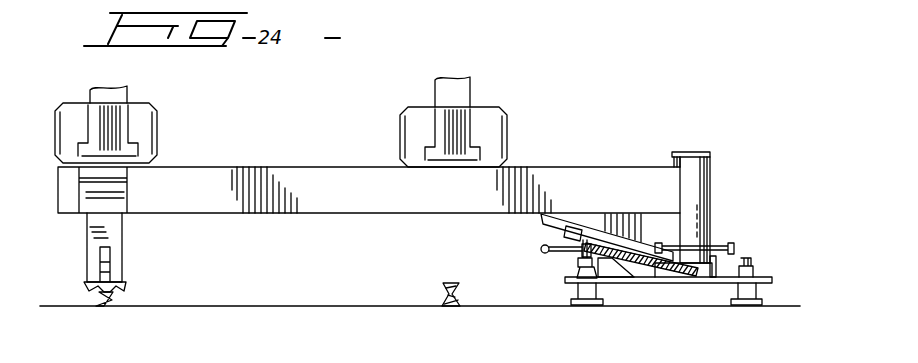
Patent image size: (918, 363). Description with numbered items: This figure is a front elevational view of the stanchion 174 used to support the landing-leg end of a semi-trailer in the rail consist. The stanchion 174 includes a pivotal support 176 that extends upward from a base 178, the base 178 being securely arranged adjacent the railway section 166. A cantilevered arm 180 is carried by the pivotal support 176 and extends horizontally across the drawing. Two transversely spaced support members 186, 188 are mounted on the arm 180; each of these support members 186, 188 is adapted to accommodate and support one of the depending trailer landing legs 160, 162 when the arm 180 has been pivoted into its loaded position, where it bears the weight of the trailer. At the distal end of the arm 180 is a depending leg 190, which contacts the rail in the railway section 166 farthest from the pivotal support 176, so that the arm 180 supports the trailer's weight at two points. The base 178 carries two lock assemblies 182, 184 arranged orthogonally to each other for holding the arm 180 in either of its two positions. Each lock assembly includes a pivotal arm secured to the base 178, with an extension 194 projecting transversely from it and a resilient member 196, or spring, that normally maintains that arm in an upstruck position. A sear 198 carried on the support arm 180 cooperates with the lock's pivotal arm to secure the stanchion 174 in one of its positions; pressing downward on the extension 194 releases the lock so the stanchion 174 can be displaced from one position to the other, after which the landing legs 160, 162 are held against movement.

The trailer landing leg 160 is at (463, 90).
The trailer landing leg 162 is at (123, 98).
The railway section 166 is at (440, 287).
The stanchion 174 is at (688, 150).
The pivotal support 176 is at (697, 178).
The base 178 is at (762, 285).
The cantilevered arm 180 is at (303, 175).
The lock assembly 182 is at (574, 258).
The lock assembly 184 is at (725, 263).
The support member 186 is at (141, 132).
The support member 188 is at (485, 143).
The depending leg 190 is at (117, 254).
The extension 194 is at (541, 249).
The resilient member 196 is at (627, 262).
The sear 198 is at (580, 222).